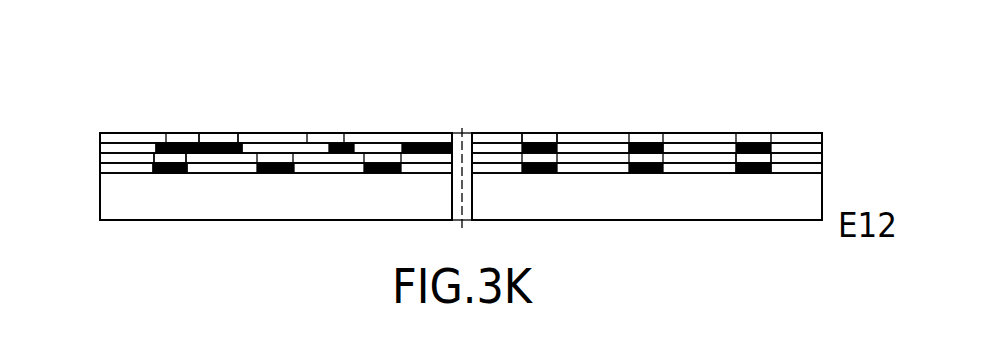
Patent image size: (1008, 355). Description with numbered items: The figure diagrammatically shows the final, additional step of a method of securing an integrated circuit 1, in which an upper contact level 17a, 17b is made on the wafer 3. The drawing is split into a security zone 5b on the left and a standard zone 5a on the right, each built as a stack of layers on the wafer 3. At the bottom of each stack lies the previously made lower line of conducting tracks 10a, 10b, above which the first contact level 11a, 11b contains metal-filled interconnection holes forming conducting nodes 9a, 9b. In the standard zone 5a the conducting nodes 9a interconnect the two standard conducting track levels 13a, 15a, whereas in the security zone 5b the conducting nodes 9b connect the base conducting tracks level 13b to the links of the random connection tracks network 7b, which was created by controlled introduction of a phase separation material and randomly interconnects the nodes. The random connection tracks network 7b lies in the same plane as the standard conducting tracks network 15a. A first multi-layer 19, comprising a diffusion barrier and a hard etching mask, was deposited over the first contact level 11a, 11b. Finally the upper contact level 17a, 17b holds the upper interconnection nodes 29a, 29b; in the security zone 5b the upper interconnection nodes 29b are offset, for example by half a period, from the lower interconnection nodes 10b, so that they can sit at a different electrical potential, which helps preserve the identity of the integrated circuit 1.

The integrated circuit 1 is at (361, 268).
The wafer 3 is at (275, 200).
The standard zone 5a is at (603, 89).
The security zone 5b is at (327, 89).
The random connection tracks network 7b is at (180, 150).
The conducting nodes 9a is at (752, 150).
The conducting nodes 9b is at (168, 150).
The lower line of conducting tracks 10a is at (760, 163).
The lower line of conducting tracks 10b is at (170, 157).
The first contact level 11a is at (823, 157).
The first contact level 11b is at (99, 157).
The standard conducting track level 13a is at (823, 168).
The base conducting tracks level 13b is at (99, 169).
The standard conducting tracks network 15a is at (648, 143).
The upper contact level 17a is at (812, 131).
The upper contact level 17b is at (111, 131).
The first multi-layer 19 is at (100, 148).
The upper interconnection nodes 29a is at (543, 133).
The upper interconnection nodes 29b is at (222, 133).